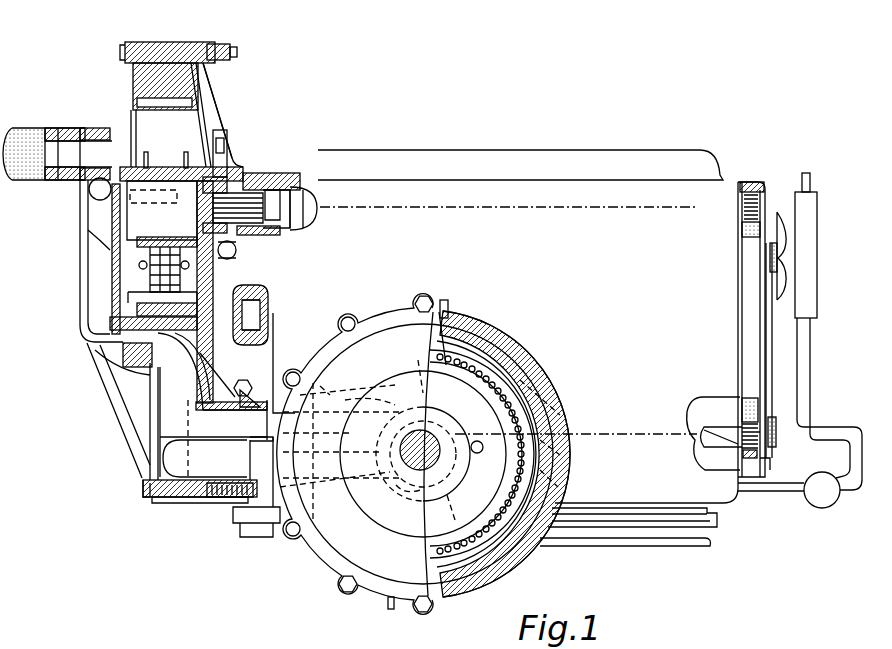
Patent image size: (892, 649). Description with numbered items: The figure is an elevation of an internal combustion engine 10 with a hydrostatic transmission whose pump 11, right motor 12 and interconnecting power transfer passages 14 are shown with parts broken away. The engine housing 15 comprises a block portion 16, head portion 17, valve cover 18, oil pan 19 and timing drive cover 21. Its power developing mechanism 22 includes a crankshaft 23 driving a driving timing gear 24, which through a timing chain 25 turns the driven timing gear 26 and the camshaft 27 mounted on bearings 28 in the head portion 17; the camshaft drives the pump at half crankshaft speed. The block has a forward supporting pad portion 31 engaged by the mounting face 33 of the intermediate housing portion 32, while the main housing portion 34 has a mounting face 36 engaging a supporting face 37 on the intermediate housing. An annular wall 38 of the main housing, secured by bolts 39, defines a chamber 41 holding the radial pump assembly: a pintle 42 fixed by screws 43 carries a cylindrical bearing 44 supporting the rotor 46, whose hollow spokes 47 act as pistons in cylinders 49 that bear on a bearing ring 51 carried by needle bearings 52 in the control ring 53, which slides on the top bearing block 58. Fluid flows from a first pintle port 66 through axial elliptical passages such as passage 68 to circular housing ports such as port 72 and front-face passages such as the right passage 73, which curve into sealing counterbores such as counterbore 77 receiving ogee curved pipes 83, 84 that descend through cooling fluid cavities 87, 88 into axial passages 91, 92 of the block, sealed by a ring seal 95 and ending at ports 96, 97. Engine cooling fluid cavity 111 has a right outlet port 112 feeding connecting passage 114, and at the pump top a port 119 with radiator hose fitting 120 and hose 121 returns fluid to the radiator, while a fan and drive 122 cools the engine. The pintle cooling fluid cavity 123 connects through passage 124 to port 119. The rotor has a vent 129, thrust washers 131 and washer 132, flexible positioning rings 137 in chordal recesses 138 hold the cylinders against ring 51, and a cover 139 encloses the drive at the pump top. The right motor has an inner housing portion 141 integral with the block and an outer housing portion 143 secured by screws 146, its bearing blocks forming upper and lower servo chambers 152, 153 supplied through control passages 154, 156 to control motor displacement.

The internal combustion engine 10 is at (774, 175).
The pump 11 is at (73, 103).
The right motor 12 is at (311, 571).
The power transfer passages 14 is at (73, 326).
The housing 15 is at (722, 334).
The block portion 16 is at (727, 370).
The head portion 17 is at (268, 180).
The valve cover 18 is at (677, 162).
The oil pan 19 is at (680, 538).
The timing drive cover 21 is at (762, 467).
The power developing mechanism 22 is at (700, 437).
The crankshaft 23 is at (727, 427).
The driving timing gear 24 is at (747, 450).
The timing chain 25 is at (738, 440).
The driven timing gear 26 is at (742, 212).
The camshaft 27 is at (272, 197).
The bearings 28 is at (253, 235).
The supporting pad portion 31 is at (240, 385).
The intermediate housing portion 32 is at (197, 500).
The mounting face 33 is at (240, 490).
The main housing portion 34 is at (117, 353).
The mounting face 36 is at (198, 503).
The supporting face 37 is at (190, 478).
The annular wall 38 is at (163, 42).
The bolts 39 is at (128, 50).
The chamber 41 is at (190, 133).
The pintle 42 is at (47, 165).
The screws 43 is at (133, 108).
The cylindrical bearing 44 is at (165, 269).
The rotor 46 is at (227, 150).
The hollow spokes 47 is at (159, 292).
The cylinders 49 is at (187, 277).
The bearing ring 51 is at (140, 303).
The needle bearings 52 is at (192, 330).
The control ring 53 is at (137, 318).
The top bearing block 58 is at (182, 63).
The first pintle port 66 is at (161, 210).
The axial elliptical passage 68 is at (481, 452).
The circular housing port 72 is at (381, 486).
The right passage 73 is at (100, 343).
The sealing counterbore 77 is at (150, 396).
The ogee curved pipe 83 is at (170, 402).
The ogee curved pipe 84 is at (173, 458).
The cooling fluid cavity 87 is at (198, 372).
The cooling fluid cavity 88 is at (220, 478).
The axial passage 91 is at (333, 380).
The axial passage 92 is at (320, 483).
The ring seal 95 is at (245, 397).
The port 96 is at (360, 394).
The port 97 is at (463, 516).
The engine housing cooling fluid cavity 111 is at (267, 310).
The right outlet port 112 is at (250, 323).
The right connecting cooling fluid passage 114 is at (250, 291).
The port 119 is at (97, 140).
The radiator hose fitting 120 is at (92, 196).
The hose 121 is at (30, 183).
The fan and drive 122 is at (773, 262).
The pintle cooling fluid cavity 123 is at (155, 200).
The passage 124 is at (112, 172).
The vent 129 is at (188, 236).
The thrust washers 131 is at (97, 192).
The washer 132 is at (263, 172).
The positioning rings 137 is at (148, 258).
The chordal recess 138 is at (139, 264).
The cover 139 is at (200, 110).
The inner housing portion 141 is at (500, 330).
The outer housing portion 143 is at (383, 317).
The screws 146 is at (348, 318).
The upper servo chamber 152 is at (472, 317).
The lower servo chamber 153 is at (500, 562).
The control passage 154 is at (437, 300).
The control passage 156 is at (388, 608).